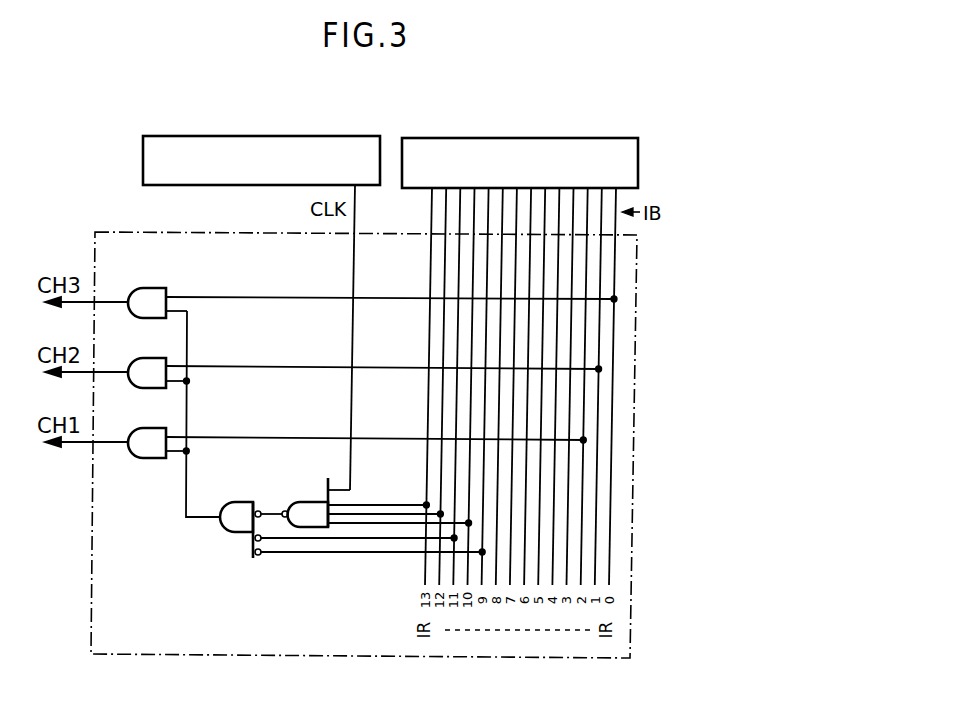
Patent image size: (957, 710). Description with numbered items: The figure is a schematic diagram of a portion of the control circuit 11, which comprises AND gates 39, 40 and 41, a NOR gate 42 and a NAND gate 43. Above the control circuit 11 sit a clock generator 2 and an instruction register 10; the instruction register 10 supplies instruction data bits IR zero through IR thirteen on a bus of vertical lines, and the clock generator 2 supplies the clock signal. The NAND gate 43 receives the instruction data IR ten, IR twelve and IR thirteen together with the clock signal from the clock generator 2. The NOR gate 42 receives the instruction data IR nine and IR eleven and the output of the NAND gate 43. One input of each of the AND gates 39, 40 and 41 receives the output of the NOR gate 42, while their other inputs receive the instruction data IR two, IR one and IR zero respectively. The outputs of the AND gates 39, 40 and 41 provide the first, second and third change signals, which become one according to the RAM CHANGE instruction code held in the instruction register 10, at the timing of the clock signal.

The clock generator 2 is at (283, 136).
The instruction register 10 is at (545, 138).
The control circuit 11 is at (91, 598).
The AND gate 39 is at (146, 428).
The AND gate 40 is at (147, 358).
The AND gate 41 is at (148, 288).
The NOR gate 42 is at (238, 502).
The NAND gate 43 is at (308, 502).